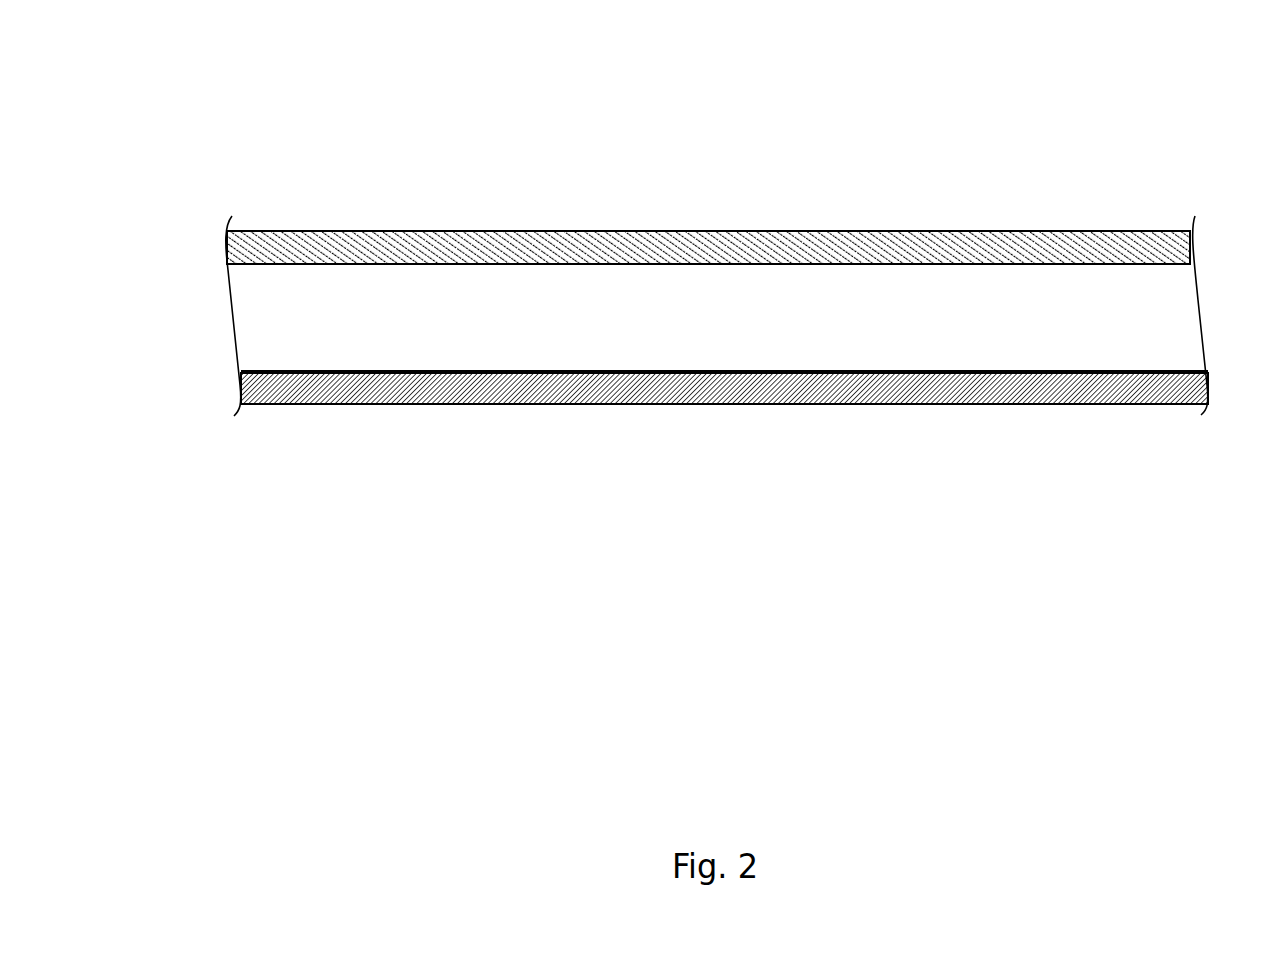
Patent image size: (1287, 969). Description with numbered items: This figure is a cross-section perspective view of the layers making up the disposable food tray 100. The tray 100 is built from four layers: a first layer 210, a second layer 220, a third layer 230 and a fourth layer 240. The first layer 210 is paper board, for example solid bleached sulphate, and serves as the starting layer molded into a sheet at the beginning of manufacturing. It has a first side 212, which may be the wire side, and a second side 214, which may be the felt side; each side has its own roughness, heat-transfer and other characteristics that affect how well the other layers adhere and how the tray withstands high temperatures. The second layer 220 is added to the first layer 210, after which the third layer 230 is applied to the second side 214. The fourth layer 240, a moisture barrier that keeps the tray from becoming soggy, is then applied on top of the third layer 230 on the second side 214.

The disposable food tray 100 is at (634, 121).
The first layer 210 is at (247, 319).
The first side 212 is at (1140, 263).
The second side 214 is at (1150, 368).
The second layer 220 is at (247, 250).
The third layer 230 is at (243, 373).
The fourth layer 240 is at (255, 397).